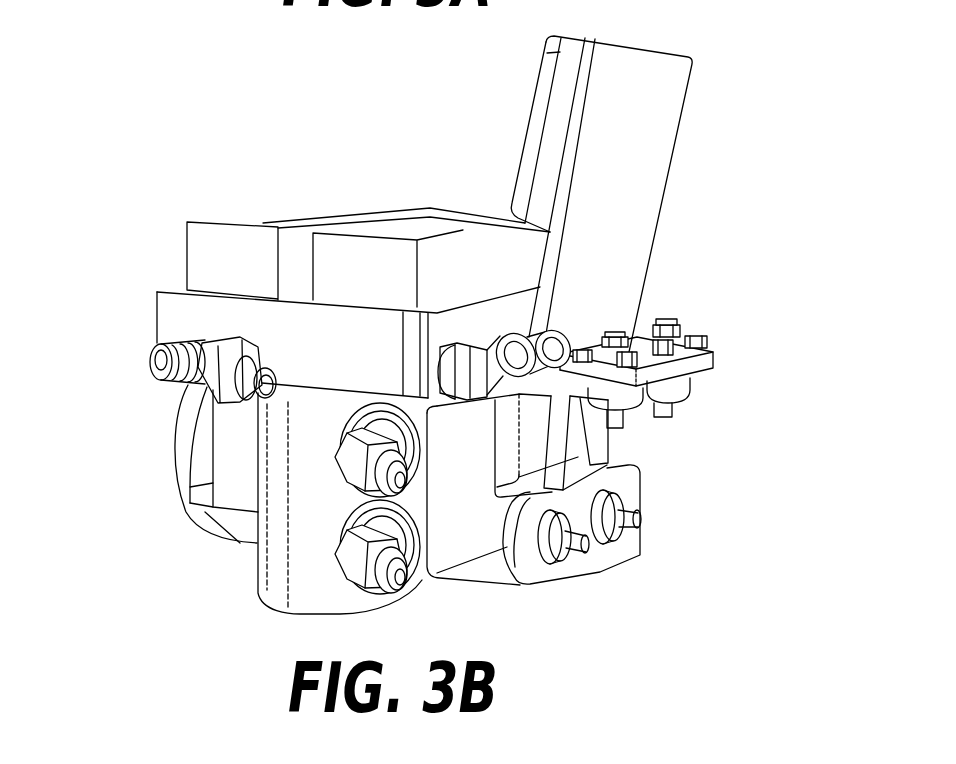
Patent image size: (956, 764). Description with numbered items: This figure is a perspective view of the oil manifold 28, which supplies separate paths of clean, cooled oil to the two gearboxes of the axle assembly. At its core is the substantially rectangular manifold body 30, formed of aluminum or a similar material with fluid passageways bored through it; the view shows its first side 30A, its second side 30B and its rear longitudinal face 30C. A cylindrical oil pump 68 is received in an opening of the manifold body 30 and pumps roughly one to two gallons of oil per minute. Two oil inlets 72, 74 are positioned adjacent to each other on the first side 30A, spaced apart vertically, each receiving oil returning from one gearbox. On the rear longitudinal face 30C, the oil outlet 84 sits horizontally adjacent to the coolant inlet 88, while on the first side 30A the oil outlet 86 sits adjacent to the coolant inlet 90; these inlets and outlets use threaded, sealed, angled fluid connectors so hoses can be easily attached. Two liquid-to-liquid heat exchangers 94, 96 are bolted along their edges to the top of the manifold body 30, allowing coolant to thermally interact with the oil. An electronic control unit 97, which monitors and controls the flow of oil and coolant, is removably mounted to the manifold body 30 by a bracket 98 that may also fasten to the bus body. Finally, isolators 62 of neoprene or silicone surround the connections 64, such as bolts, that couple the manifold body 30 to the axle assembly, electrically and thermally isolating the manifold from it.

The oil manifold 28 is at (727, 263).
The manifold body 30 is at (481, 538).
The first side 30A is at (250, 618).
The second side 30B is at (665, 305).
The rear longitudinal face 30C is at (690, 519).
The isolator 62 is at (690, 392).
The connection 64 is at (673, 412).
The oil pump 68 is at (204, 541).
The oil inlet 72 is at (384, 598).
The oil inlet 74 is at (438, 537).
The oil outlet 84 is at (535, 345).
The oil outlet 86 is at (150, 362).
The coolant inlet 88 is at (494, 350).
The coolant inlet 90 is at (260, 357).
The heat exchanger 94 is at (384, 232).
The heat exchanger 96 is at (237, 230).
The electronic control unit 97 is at (570, 52).
The bracket 98 is at (677, 138).